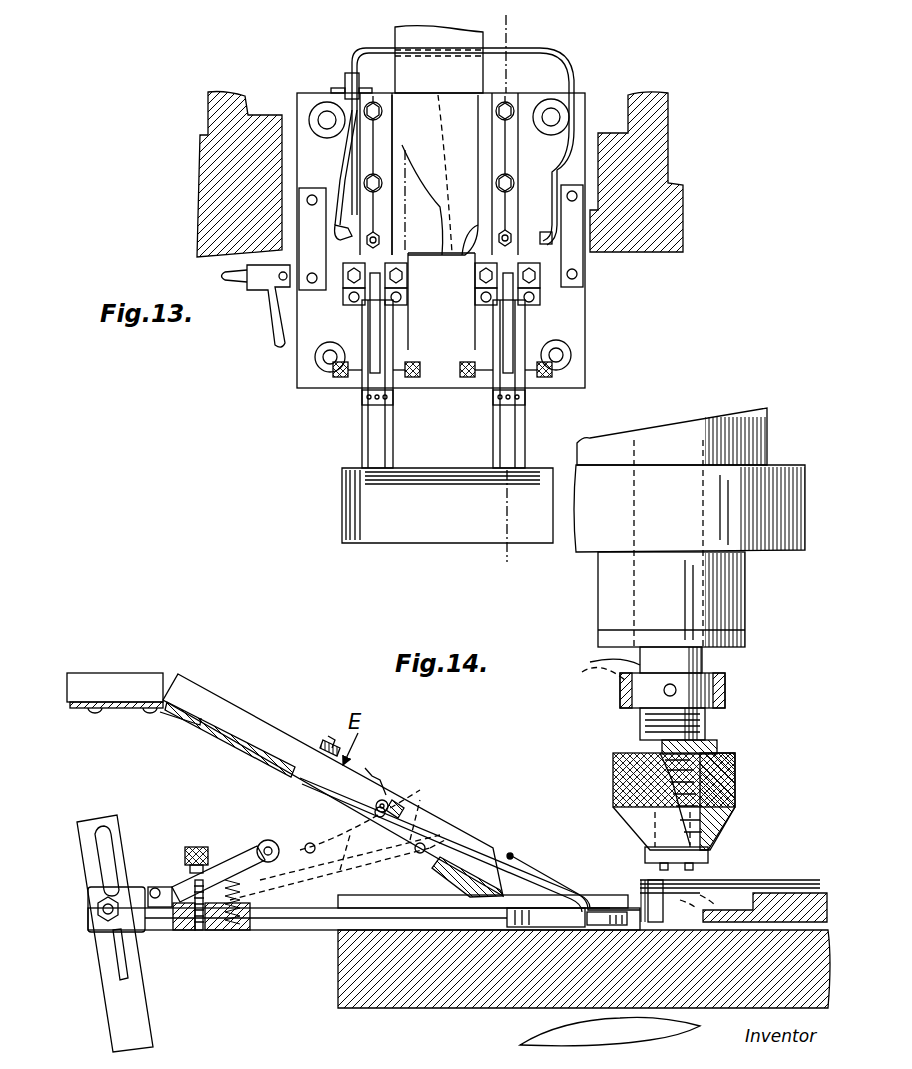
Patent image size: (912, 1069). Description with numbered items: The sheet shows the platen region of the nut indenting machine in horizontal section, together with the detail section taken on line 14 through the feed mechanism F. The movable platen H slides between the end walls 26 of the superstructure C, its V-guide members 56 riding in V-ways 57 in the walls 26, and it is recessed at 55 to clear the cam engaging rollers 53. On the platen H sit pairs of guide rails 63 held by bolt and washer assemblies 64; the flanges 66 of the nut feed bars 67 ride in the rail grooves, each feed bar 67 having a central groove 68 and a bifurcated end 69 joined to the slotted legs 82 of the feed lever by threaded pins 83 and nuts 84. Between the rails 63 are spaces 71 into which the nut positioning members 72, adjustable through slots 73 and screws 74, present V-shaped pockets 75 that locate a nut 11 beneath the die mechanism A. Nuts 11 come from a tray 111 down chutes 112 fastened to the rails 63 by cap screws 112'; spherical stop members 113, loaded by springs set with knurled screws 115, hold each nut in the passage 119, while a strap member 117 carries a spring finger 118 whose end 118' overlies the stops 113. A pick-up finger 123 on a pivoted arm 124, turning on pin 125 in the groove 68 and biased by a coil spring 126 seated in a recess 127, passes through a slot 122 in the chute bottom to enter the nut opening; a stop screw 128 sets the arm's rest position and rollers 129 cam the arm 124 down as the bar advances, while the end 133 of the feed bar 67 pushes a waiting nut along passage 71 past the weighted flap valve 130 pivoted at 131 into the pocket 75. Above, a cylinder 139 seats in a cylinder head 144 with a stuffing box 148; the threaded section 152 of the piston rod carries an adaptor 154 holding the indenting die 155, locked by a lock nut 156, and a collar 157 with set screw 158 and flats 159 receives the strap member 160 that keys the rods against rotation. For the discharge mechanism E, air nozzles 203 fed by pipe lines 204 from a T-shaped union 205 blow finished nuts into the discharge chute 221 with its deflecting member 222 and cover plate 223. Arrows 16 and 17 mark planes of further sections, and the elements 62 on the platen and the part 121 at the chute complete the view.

In FIG. 13, the nut 11 is at (518, 216).
In FIG. 14, the nut 11 is at (722, 882).
In FIG. 13, the section line 14— 14 is at (500, 27).
In FIG. 14, the adjusting screw 16 is at (196, 845).
In FIG. 13, the feed rods 17 is at (308, 360).
In FIG. 13, the end walls 26 is at (212, 102).
In FIG. 14, the cam engaging rollers 53 is at (537, 1032).
In FIG. 14, the recess 55 is at (610, 1028).
In FIG. 13, the V-guide members 56 is at (299, 198).
In FIG. 13, the V-ways 57 is at (595, 252).
In FIG. 13, the rollers 62 is at (318, 116).
In FIG. 13, the guide rails 63 is at (345, 286).
In FIG. 14, the guide rails 63 is at (612, 895).
In FIG. 13, the bolt and washer assemblies 64 is at (478, 270).
In FIG. 14, the outwardly extending flanges 66 is at (287, 930).
In FIG. 14, the nut feed bars 67 is at (314, 930).
In FIG. 14, the longitudinally extending grooves 68 is at (180, 928).
In FIG. 14, the bifurcated ends 69 is at (112, 925).
In FIG. 14, the spaces 71 is at (528, 905).
In FIG. 13, the nut positioning members 72 is at (378, 95).
In FIG. 14, the nut positioning members 72 is at (805, 893).
In FIG. 13, the bolt receiving slots 73 is at (440, 145).
In FIG. 13, the screws 74 is at (382, 112).
In FIG. 13, the V-shaped pockets 75 is at (367, 234).
In FIG. 14, the V-shaped pockets 75 is at (730, 901).
In FIG. 14, the slots 82 is at (96, 830).
In FIG. 14, the threaded pins 83 is at (98, 908).
In FIG. 14, the nuts 84 is at (92, 896).
In FIG. 13, the tray 111 is at (416, 530).
In FIG. 14, the tray 111 is at (107, 678).
In FIG. 13, the chutes 112 is at (443, 447).
In FIG. 14, the chutes 112 is at (333, 783).
In FIG. 13, the cap screws 112' is at (445, 316).
In FIG. 13, the spherical nut stop members 113 is at (472, 297).
In FIG. 14, the spherical nut stop members 113 is at (345, 838).
In FIG. 13, the knurled screws 115 is at (433, 375).
In FIG. 13, the strap member 117 is at (393, 398).
In FIG. 14, the strap member 117 is at (327, 742).
In FIG. 13, the spring finger 118 is at (425, 352).
In FIG. 14, the spring finger 118 is at (387, 776).
In FIG. 14, the end of spring finger 118' is at (419, 776).
In FIG. 14, the space 119 is at (470, 843).
In FIG. 14, the guide strip 121 is at (198, 730).
In FIG. 14, the slots 122 is at (280, 778).
In FIG. 14, the pick-up finger 123 is at (262, 838).
In FIG. 14, the pivoted arm 124 is at (170, 858).
In FIG. 14, the pin 125 is at (156, 890).
In FIG. 14, the coil spring 126 is at (233, 938).
In FIG. 14, the recess 127 is at (232, 925).
In FIG. 14, the stop screw 128 is at (222, 835).
In FIG. 14, the rollers 129 is at (272, 842).
In FIG. 14, the flap valve 130 is at (535, 862).
In FIG. 14, the pivot 131 is at (511, 852).
In FIG. 14, the end of feed bar 133 is at (584, 969).
In FIG. 14, the cylinders 139 is at (762, 432).
In FIG. 14, the cylinder heads 144 is at (783, 540).
In FIG. 14, the stuffing boxes 148 is at (745, 636).
In FIG. 14, the threaded portions 152 is at (735, 753).
In FIG. 14, the adaptor members 154 is at (735, 772).
In FIG. 14, the indenting dies 155 is at (708, 852).
In FIG. 14, the lock nuts 156 is at (705, 740).
In FIG. 14, the collar 157 is at (604, 663).
In FIG. 14, the set screw 158 is at (670, 684).
In FIG. 14, the flats 159 is at (725, 680).
In FIG. 14, the strap member 160 is at (725, 700).
In FIG. 13, the air nozzles 203 is at (335, 240).
In FIG. 13, the pipe lines 204 is at (565, 69).
In FIG. 13, the T-shaped union 205 is at (348, 76).
In FIG. 13, the discharge chute 221 is at (395, 46).
In FIG. 13, the deflecting member 222 is at (445, 150).
In FIG. 13, the cover plate 223 is at (437, 140).
In FIG. 14, the die mechanism A is at (738, 792).
In FIG. 13, the supporting superstructure C is at (200, 147).
In FIG. 13, the nut discharge mechanism E is at (344, 174).
In FIG. 13, the nut feeding mechanism F is at (362, 422).
In FIG. 13, the movable platen H is at (295, 380).